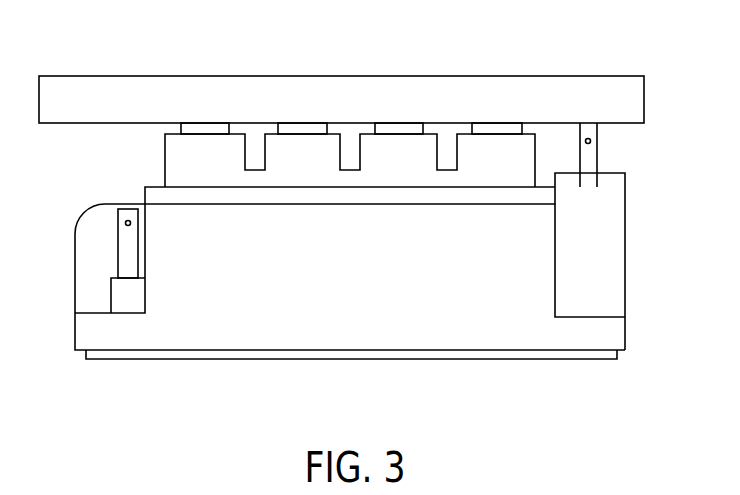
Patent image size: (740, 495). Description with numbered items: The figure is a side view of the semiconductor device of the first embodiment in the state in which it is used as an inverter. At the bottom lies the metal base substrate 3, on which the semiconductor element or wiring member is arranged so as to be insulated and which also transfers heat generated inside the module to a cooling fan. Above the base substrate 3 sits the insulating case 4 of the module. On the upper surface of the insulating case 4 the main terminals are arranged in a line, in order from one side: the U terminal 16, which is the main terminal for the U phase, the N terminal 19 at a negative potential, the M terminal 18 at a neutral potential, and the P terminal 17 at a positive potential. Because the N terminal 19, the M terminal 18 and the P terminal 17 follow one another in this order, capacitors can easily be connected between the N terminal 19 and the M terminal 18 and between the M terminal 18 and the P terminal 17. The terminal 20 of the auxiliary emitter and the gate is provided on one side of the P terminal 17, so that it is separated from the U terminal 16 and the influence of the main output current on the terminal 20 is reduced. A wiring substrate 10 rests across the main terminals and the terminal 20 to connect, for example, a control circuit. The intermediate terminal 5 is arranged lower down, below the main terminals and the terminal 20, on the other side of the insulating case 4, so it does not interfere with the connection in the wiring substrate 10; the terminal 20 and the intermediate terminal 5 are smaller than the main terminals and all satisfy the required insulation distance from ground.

The wiring substrate 10 is at (97, 97).
The U terminal 16 is at (203, 123).
The N terminal 19 is at (303, 125).
The M terminal 18 is at (397, 125).
The P terminal 17 is at (495, 125).
The terminal of the auxiliary emitter and the gate 20 is at (598, 158).
The intermediate terminal 5 is at (138, 262).
The insulating case 4 is at (433, 335).
The metal base substrate 3 is at (322, 359).